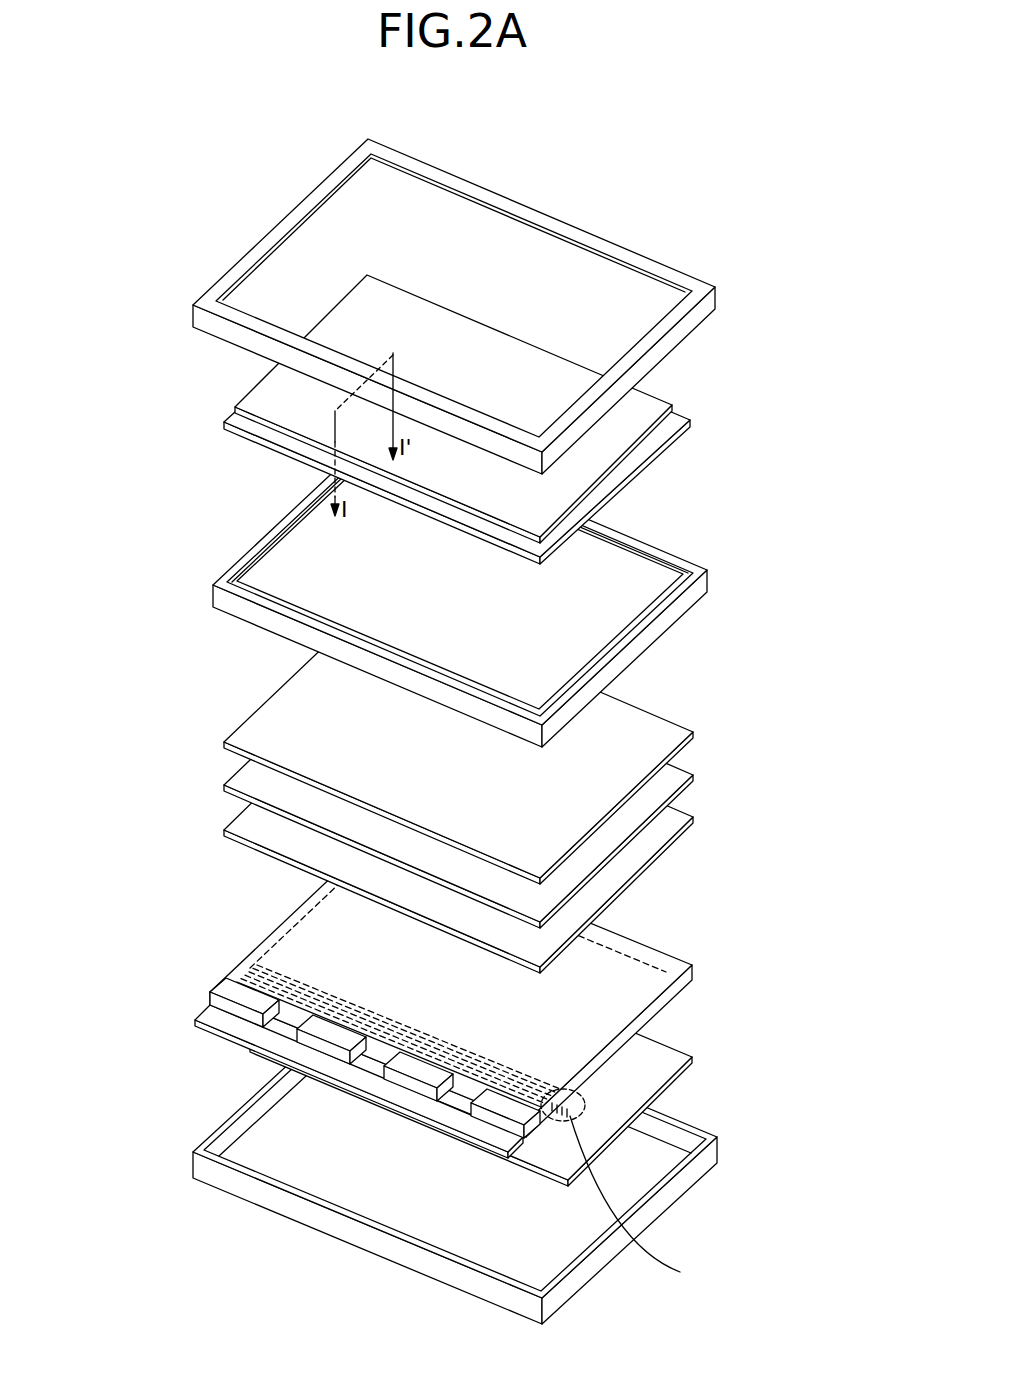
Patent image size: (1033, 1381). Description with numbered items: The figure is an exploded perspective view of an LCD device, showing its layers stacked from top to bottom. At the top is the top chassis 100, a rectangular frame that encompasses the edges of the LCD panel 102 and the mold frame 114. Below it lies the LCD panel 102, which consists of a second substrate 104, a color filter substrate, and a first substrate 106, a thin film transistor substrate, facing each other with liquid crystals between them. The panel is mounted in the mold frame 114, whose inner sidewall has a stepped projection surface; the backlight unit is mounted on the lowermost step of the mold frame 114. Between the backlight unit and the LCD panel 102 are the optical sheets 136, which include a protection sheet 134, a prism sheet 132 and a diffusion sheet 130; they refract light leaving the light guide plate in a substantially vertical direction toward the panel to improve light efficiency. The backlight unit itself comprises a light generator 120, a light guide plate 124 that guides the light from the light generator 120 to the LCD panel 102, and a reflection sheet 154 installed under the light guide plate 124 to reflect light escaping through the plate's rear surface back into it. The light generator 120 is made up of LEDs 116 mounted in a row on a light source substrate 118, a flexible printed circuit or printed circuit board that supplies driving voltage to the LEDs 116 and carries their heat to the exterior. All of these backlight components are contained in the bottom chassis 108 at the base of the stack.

The top chassis 100 is at (718, 300).
The LCD panel 102 is at (567, 419).
The second substrate 104 is at (673, 393).
The first substrate 106 is at (683, 415).
The bottom chassis 108 is at (692, 1170).
The mold frame 114 is at (698, 582).
The LEDs 116 is at (213, 990).
The light source substrate 118 is at (196, 1023).
The light generator 120 is at (276, 1056).
The light guide plate 124 is at (647, 1017).
The diffusion sheet 130 is at (677, 815).
The prism sheet 132 is at (673, 773).
The protection sheet 134 is at (668, 737).
The optical sheets 136 is at (567, 784).
The reflection sheet 154 is at (668, 1072).